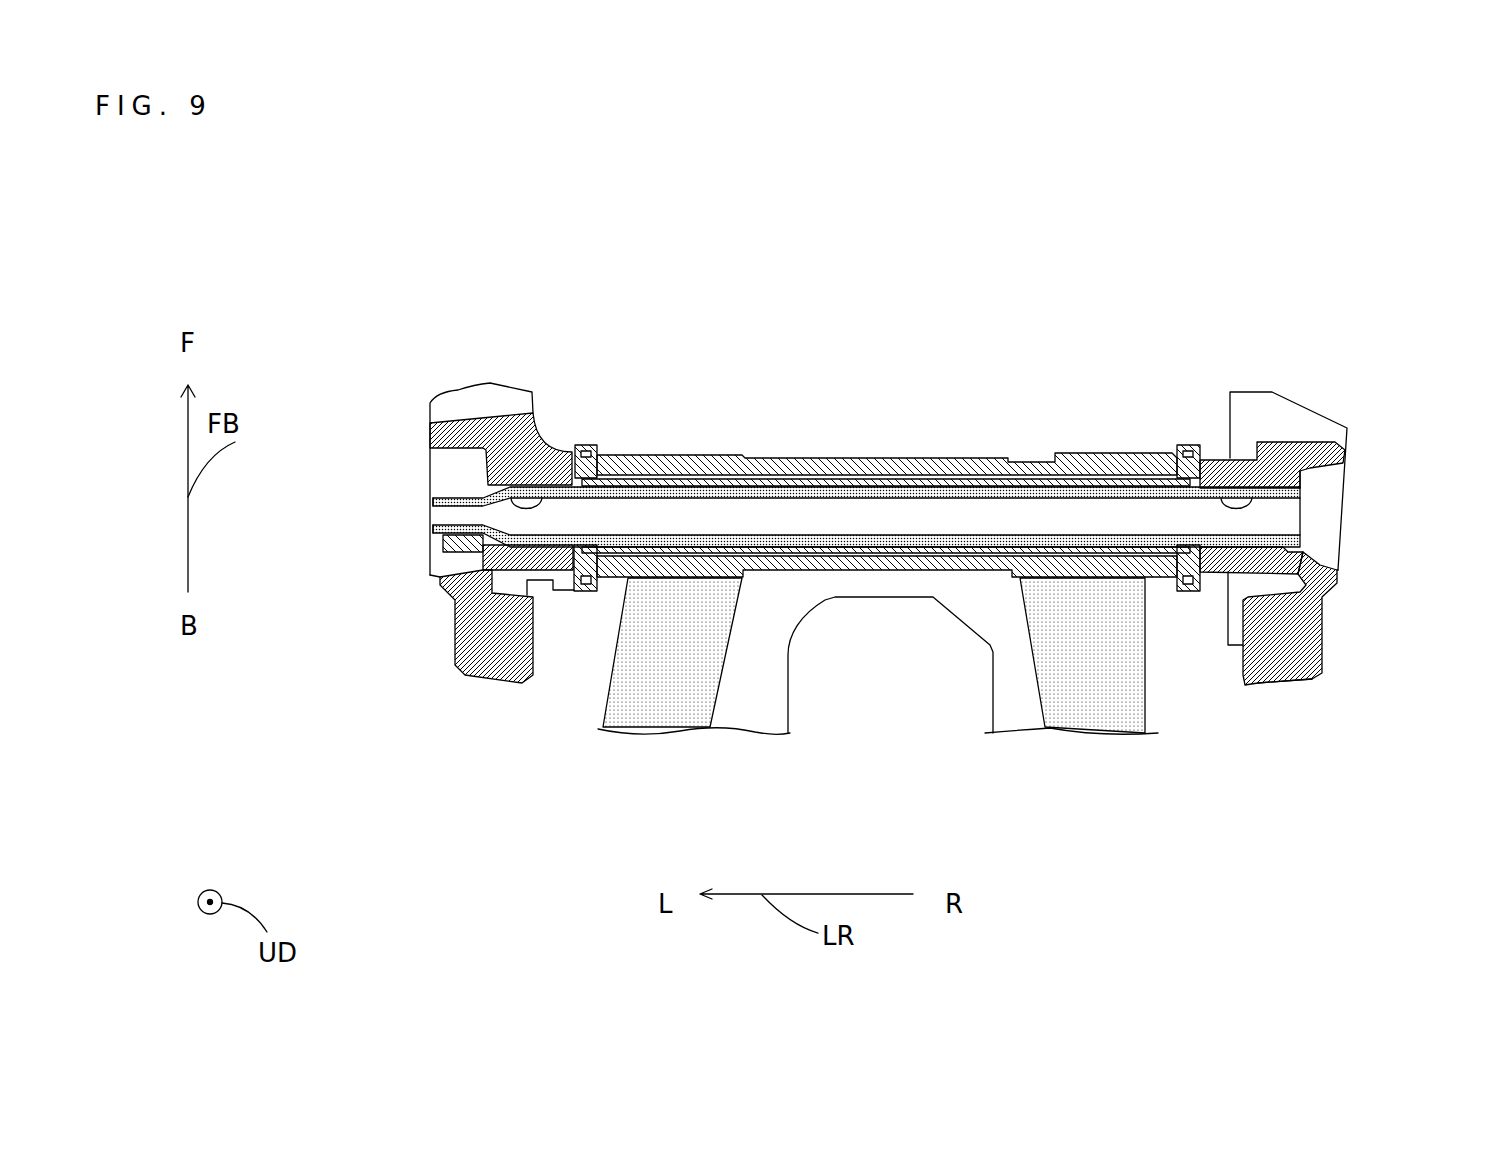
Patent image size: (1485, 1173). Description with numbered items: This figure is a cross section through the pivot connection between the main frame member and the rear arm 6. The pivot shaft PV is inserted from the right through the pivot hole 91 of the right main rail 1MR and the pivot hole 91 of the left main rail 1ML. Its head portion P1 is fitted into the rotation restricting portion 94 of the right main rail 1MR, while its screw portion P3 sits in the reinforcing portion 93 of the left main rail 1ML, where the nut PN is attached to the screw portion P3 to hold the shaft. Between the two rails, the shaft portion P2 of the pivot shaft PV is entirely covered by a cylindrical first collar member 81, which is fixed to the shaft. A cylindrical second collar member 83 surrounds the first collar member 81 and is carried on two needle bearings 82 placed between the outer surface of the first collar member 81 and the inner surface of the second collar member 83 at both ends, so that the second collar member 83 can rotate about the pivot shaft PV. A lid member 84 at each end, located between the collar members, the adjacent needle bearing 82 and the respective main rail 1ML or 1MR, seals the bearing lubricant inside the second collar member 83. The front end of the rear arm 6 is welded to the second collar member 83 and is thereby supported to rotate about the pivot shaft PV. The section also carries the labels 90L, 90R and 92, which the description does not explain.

The left main rail 1ML is at (483, 397).
The right main rail 1MR is at (1272, 418).
The rear arm 6 is at (677, 716).
The first collar member 81 is at (883, 480).
The needle bearing 82 is at (590, 593).
The second collar member 83 is at (775, 458).
The lid member 84 is at (577, 447).
The left holder 90L is at (436, 621).
The right holder 90R is at (1350, 617).
The pivot hole 91 is at (515, 492).
The holder body 92 is at (470, 478).
The reinforcing portion 93 is at (430, 433).
The rotation restricting portion 94 is at (1300, 681).
The head portion P1 is at (1292, 488).
The shaft portion P2 is at (957, 488).
The screw portion P3 is at (445, 490).
The nut PN is at (445, 547).
The pivot shaft PV is at (1323, 527).